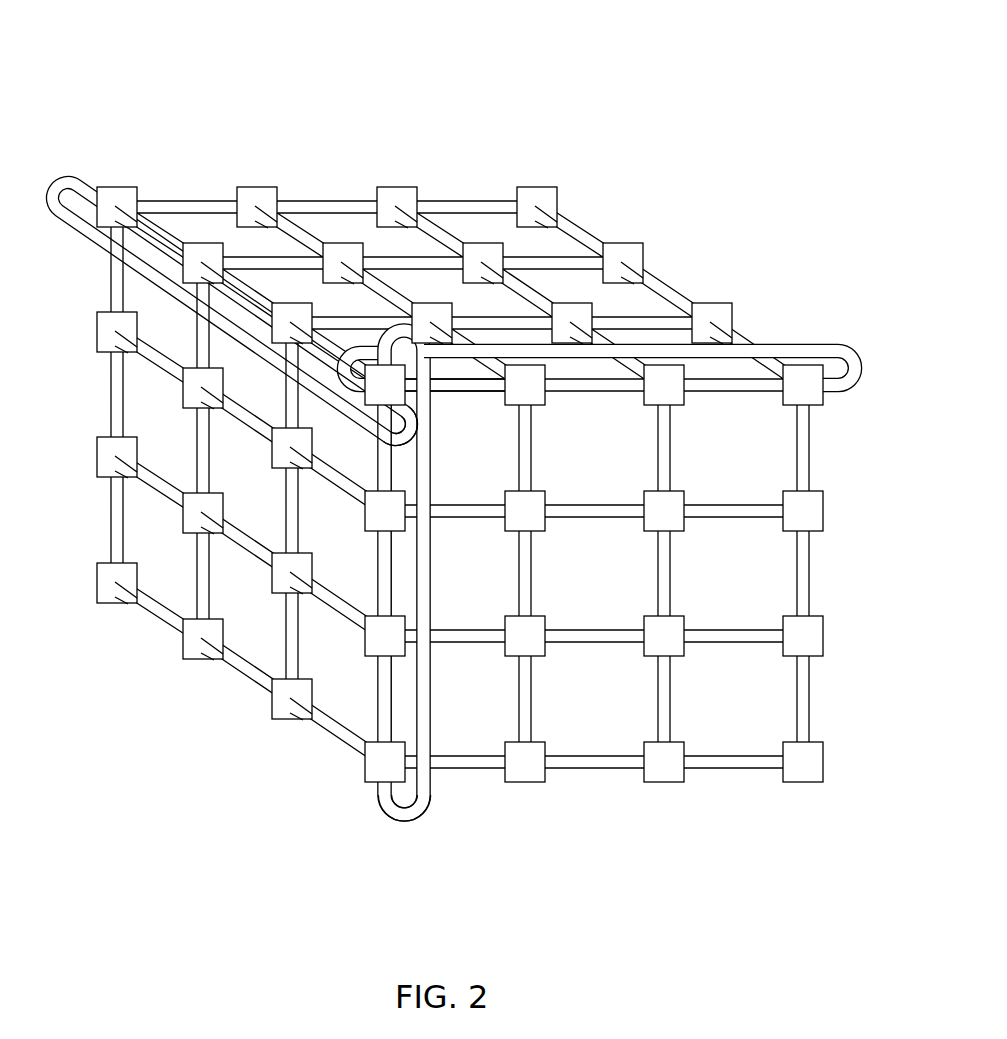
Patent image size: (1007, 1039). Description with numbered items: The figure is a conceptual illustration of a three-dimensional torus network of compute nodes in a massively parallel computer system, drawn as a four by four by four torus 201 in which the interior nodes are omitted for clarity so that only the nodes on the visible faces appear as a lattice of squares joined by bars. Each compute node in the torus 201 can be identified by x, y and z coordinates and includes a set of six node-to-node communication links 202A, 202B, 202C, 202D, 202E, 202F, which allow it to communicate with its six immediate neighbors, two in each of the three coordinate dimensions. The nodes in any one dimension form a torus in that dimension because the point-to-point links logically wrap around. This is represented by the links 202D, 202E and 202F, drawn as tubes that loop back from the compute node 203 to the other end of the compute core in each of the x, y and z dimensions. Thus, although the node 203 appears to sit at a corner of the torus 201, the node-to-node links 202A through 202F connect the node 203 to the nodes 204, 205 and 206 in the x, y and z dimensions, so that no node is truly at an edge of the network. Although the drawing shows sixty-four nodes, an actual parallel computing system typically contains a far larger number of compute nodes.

The torus 201 is at (597, 118).
The node-to-node communication link 202A is at (452, 392).
The node-to-node communication link 202B is at (390, 468).
The node-to-node communication link 202C is at (338, 352).
The node-to-node communication link 202D is at (823, 344).
The node-to-node communication link 202E is at (403, 821).
The node-to-node communication link 202F is at (64, 182).
The compute node 203 is at (357, 405).
The compute node 204 is at (118, 195).
The compute node 205 is at (812, 393).
The compute node 206 is at (375, 770).